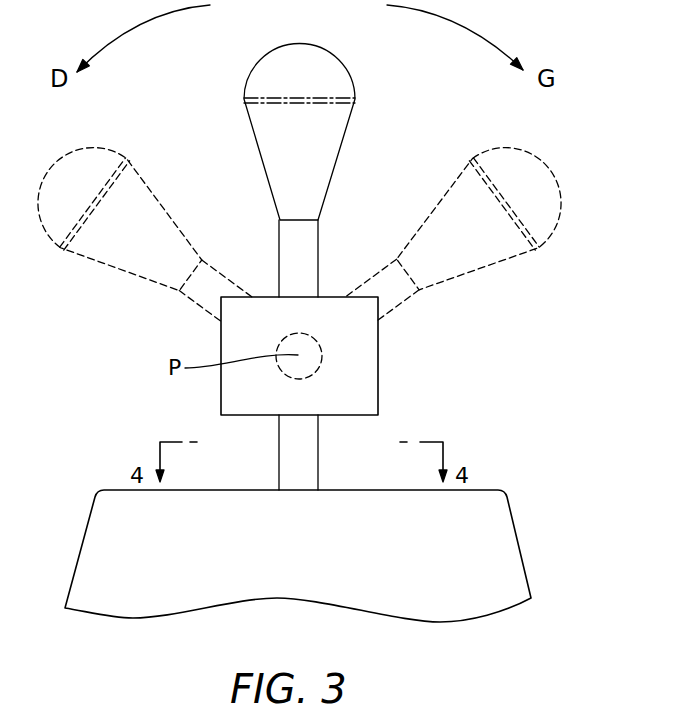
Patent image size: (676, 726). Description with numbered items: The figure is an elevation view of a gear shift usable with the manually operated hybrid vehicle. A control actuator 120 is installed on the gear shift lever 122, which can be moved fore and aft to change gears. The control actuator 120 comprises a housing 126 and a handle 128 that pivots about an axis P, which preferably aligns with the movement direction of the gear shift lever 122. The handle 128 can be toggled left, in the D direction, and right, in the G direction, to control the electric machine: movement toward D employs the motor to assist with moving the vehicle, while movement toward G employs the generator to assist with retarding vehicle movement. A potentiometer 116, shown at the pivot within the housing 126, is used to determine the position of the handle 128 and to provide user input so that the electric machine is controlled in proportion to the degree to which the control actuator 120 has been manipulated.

The potentiometer 116 is at (323, 362).
The control actuator 120 is at (462, 360).
The gear shift lever 122 is at (287, 451).
The housing 126 is at (221, 345).
The handle 128 is at (334, 130).